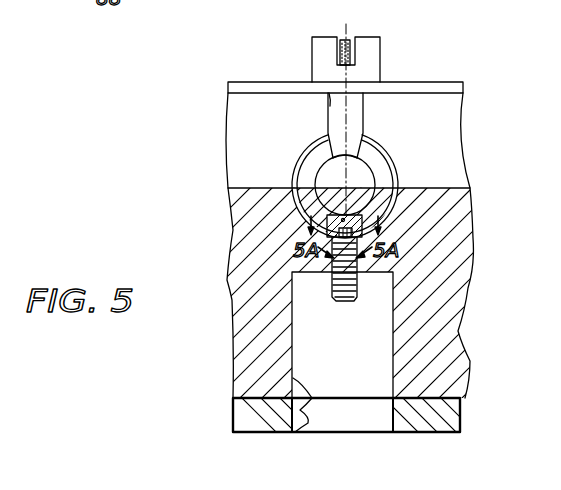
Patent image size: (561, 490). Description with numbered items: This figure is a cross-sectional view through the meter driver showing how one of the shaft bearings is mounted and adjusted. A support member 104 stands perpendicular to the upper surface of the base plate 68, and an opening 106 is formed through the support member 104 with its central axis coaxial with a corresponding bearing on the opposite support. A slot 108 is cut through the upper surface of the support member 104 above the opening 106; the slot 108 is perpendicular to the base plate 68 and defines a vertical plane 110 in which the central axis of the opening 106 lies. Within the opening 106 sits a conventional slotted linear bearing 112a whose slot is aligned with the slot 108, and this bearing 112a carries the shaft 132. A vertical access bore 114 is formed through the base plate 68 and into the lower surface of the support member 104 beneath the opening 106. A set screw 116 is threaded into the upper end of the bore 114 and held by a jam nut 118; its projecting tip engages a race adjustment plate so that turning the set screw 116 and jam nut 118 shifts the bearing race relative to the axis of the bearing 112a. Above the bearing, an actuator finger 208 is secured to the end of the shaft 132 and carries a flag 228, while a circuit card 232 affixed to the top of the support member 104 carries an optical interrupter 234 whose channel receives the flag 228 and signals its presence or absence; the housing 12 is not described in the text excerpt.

The housing 12 is at (555, 265).
The base plate 68 is at (245, 413).
The support member 104 is at (469, 191).
The opening 106 is at (390, 186).
The slot 108 is at (334, 97).
The vertical plane 110 is at (348, 118).
The slotted linear bearing 112a is at (292, 161).
The vertical access bore 114 is at (338, 421).
The set screw 116 is at (344, 280).
The jam nut 118 is at (321, 299).
The shaft 132 is at (324, 160).
The actuator finger 208 is at (381, 107).
The flag 228 is at (341, 40).
The circuit card 232 is at (446, 82).
The optical interrupter 234 is at (381, 43).